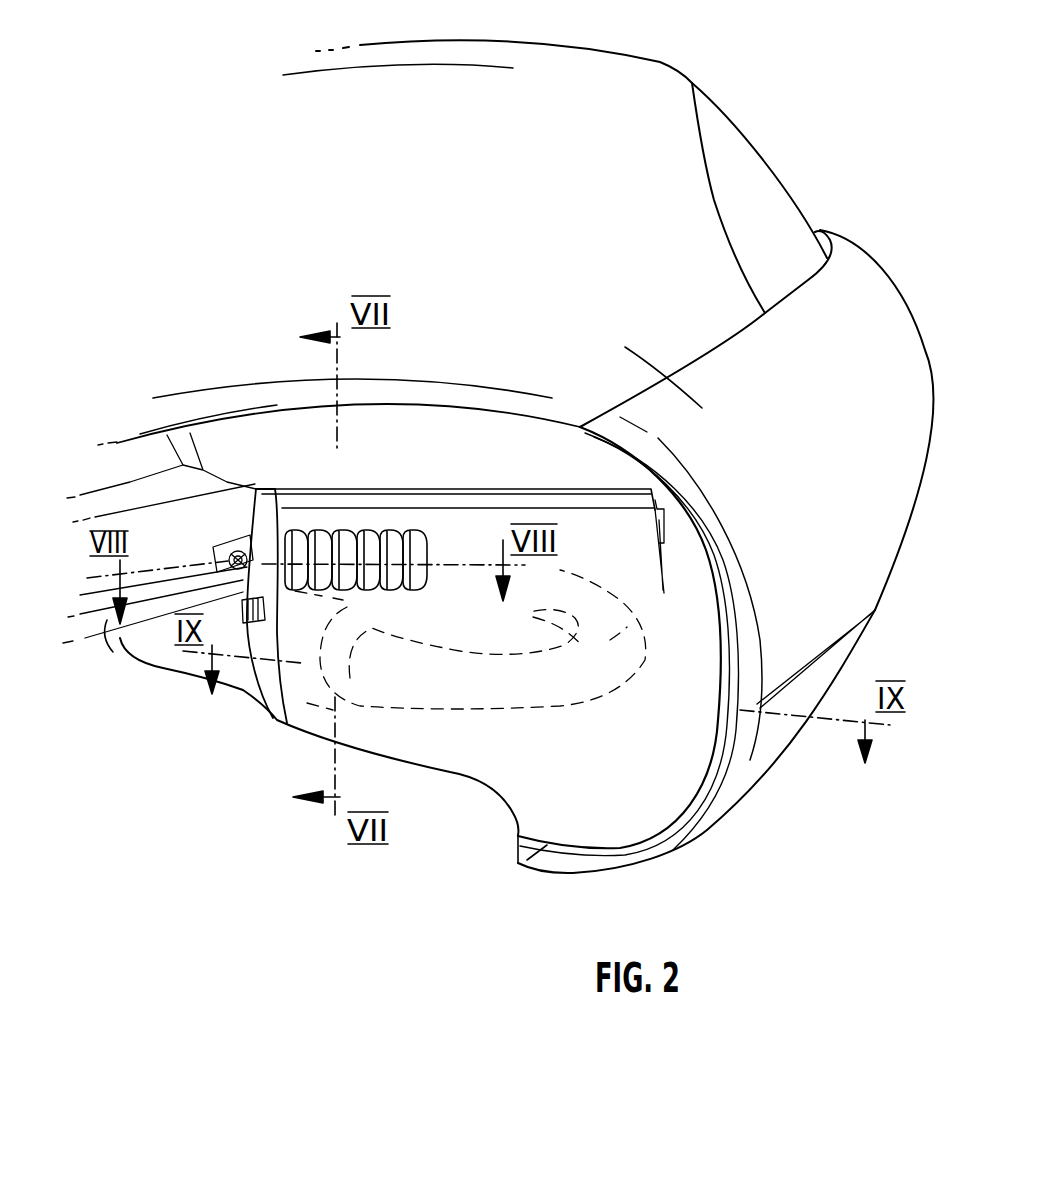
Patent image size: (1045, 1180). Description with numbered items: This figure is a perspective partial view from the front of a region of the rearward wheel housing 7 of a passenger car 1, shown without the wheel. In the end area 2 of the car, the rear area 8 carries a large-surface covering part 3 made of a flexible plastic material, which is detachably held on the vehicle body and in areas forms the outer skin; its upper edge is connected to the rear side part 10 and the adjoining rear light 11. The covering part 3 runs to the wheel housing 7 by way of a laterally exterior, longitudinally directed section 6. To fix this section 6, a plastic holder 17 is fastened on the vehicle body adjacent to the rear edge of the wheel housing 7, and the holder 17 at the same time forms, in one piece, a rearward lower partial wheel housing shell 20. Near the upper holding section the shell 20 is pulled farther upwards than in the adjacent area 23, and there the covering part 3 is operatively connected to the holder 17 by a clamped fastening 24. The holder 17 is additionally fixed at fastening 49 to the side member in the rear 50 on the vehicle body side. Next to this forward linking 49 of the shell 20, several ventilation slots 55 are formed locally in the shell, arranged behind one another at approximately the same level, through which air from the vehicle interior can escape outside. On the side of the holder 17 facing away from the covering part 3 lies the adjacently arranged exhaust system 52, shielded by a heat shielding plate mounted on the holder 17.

The passenger car 1 is at (670, 60).
The end area 2 is at (776, 97).
The covering part 3 is at (942, 392).
The laterally exterior, longitudinally directed section 6 is at (723, 477).
The wheel housing 7 is at (185, 744).
The rear area 8 is at (872, 243).
The rear side part 10 is at (691, 553).
The rear light 11 is at (772, 200).
The holder 17 is at (453, 776).
The partial wheel housing shell 20 is at (492, 631).
The adjacent area 23 is at (493, 480).
The clamped fastening 24 is at (728, 354).
The fastening at the side member 49 is at (216, 552).
The side member in the rear 50 is at (159, 577).
The exhaust system 52 is at (512, 685).
The ventilation slots 55 is at (415, 543).